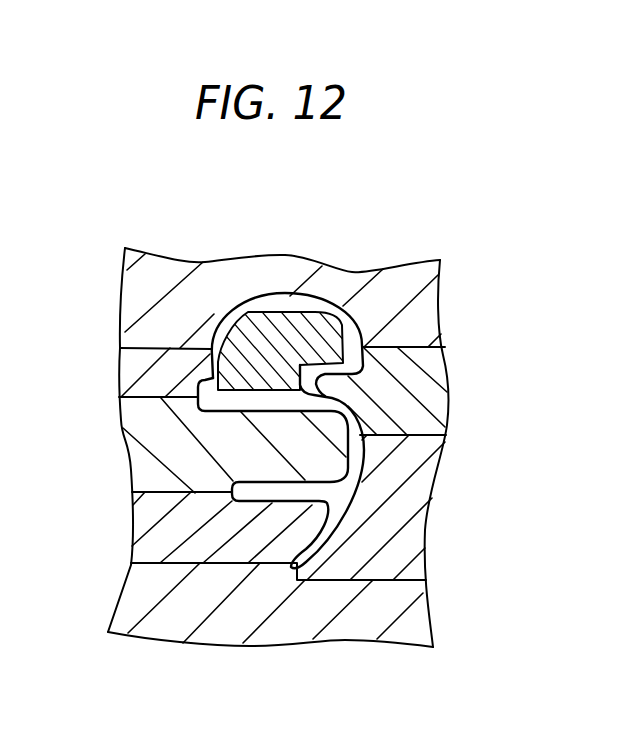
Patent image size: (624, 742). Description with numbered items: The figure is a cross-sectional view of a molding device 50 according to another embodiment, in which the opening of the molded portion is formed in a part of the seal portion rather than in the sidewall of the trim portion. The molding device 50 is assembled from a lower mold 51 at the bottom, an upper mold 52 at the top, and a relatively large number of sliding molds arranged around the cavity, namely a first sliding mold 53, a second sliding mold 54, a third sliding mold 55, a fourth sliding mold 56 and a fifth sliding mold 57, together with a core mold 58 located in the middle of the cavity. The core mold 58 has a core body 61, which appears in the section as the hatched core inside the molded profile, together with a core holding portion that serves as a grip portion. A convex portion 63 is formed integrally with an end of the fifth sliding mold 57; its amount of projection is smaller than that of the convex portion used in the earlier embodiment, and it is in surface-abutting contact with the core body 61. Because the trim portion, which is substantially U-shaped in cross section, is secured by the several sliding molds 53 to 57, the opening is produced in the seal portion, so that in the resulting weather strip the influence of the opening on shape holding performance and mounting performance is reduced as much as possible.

The molding device 50 is at (100, 217).
The lower mold 51 is at (270, 636).
The upper mold 52 is at (312, 262).
The first sliding mold 53 is at (435, 402).
The second sliding mold 54 is at (430, 497).
The third sliding mold 55 is at (130, 533).
The fourth sliding mold 56 is at (130, 467).
The fifth sliding mold 57 is at (121, 378).
The core mold 58 is at (316, 394).
The core body 61 is at (317, 311).
The convex portion 63 is at (247, 316).